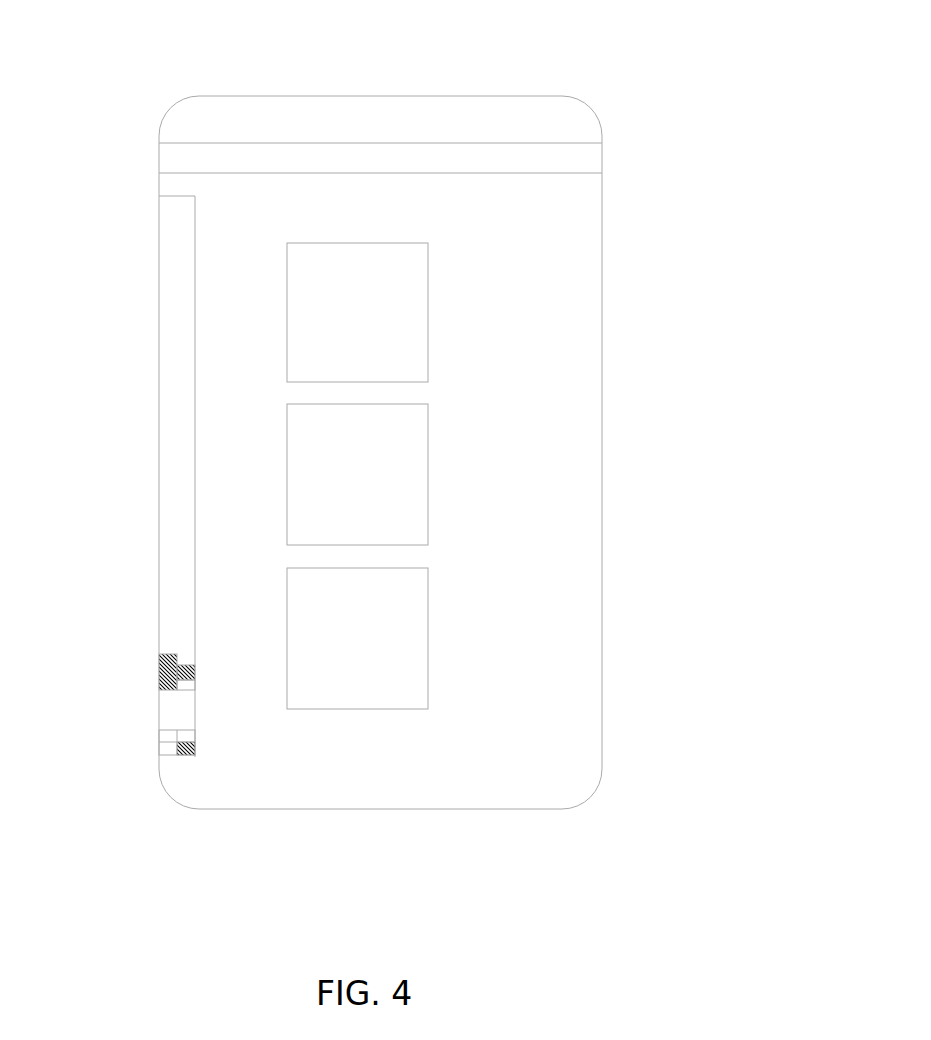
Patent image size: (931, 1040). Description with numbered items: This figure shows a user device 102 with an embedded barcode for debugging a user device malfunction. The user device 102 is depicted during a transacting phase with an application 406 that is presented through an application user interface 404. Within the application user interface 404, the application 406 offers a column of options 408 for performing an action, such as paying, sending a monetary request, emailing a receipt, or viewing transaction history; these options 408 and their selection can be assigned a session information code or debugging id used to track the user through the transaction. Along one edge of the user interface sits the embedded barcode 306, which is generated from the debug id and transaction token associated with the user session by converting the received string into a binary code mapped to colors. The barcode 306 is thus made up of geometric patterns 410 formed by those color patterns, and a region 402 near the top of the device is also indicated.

The user device 102 is at (602, 129).
The top band region 402 is at (159, 157).
The embedded barcode 306 is at (158, 456).
The options 408 is at (357, 476).
The application 406 is at (473, 220).
The application user interface 404 is at (560, 626).
The geometric patterns 410 is at (160, 736).